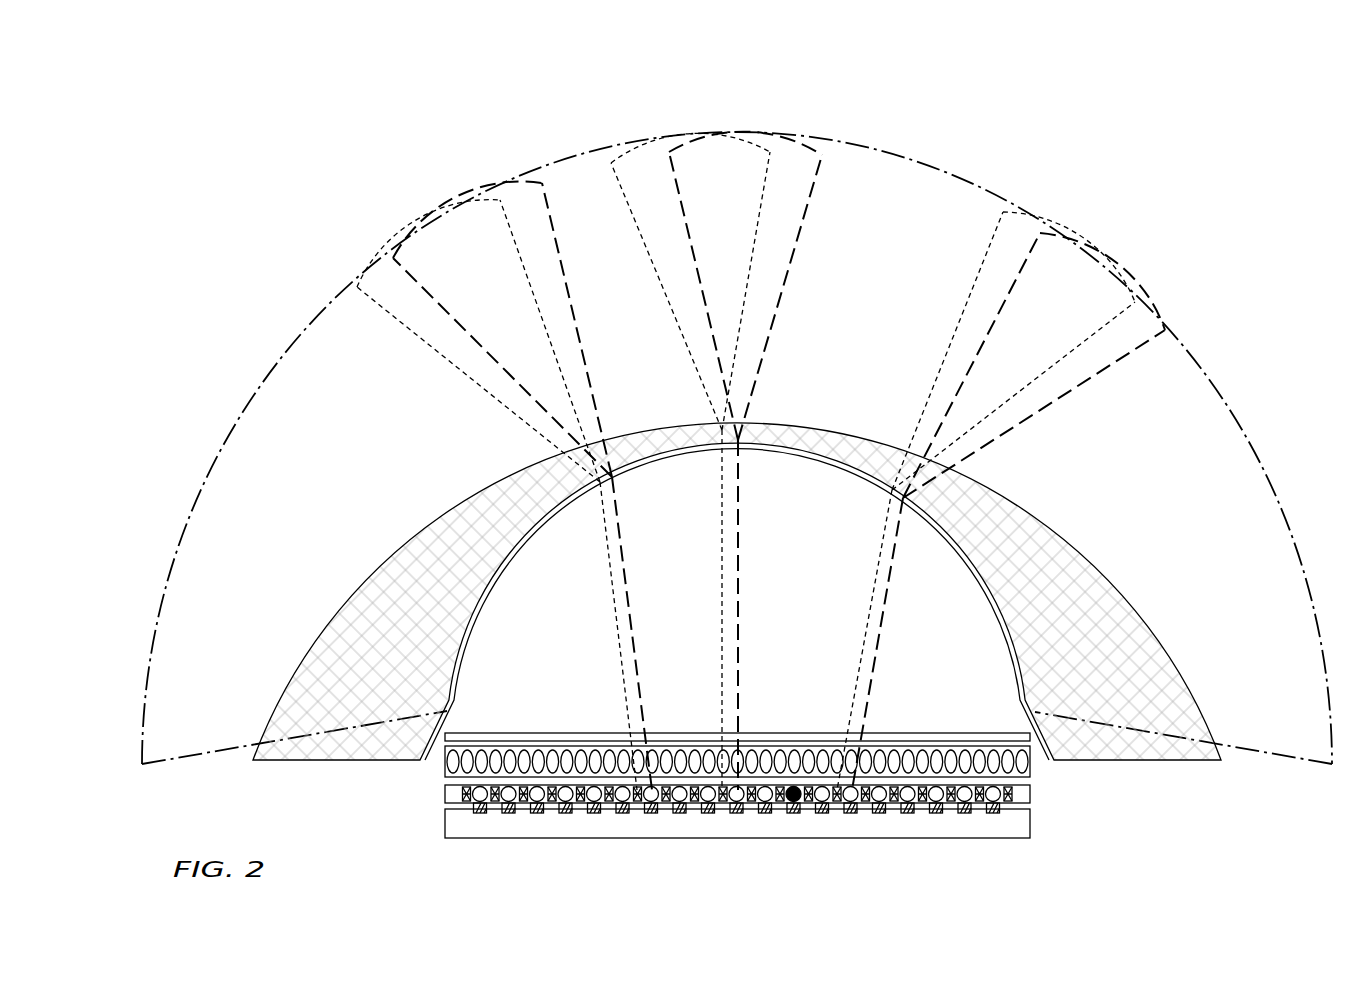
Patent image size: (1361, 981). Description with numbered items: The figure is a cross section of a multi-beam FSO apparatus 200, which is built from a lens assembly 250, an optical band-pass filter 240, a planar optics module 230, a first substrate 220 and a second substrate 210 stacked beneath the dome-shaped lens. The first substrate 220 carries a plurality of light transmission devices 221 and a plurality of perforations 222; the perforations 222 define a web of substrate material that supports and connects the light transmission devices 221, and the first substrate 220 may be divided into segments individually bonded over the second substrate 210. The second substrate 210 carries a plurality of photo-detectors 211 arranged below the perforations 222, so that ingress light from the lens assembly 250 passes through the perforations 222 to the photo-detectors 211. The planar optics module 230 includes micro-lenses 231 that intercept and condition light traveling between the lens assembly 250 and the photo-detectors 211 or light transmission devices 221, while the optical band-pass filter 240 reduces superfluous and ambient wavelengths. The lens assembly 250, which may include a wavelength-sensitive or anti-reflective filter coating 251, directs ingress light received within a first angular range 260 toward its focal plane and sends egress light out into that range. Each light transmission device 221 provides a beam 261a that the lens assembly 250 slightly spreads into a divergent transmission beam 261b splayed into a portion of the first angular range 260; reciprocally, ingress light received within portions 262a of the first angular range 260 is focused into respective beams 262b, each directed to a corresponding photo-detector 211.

The multi-beam FSO apparatus 200 is at (190, 126).
The second substrate 210 is at (1032, 828).
The photo-detectors 211 is at (566, 812).
The first substrate 220 is at (1032, 792).
The light transmission devices 221 is at (497, 801).
The perforations 222 is at (463, 797).
The planar optics module 230 is at (443, 761).
The micro-lenses 231 is at (667, 767).
The optical band-pass filter 240 is at (784, 733).
The lens assembly 250 is at (1070, 548).
The filter coating 251 is at (464, 668).
The first angular range 260 is at (1262, 463).
The beam 261a is at (606, 588).
The divergent transmission beam 261b is at (378, 254).
The portions of the first angular range 262a is at (497, 182).
The respective beams 262b is at (750, 476).